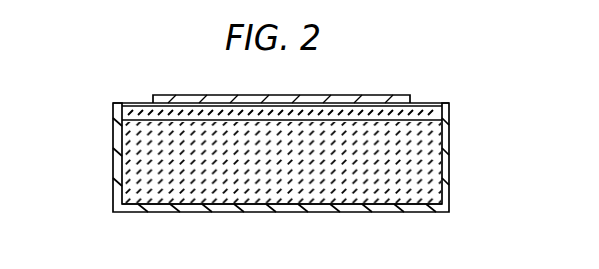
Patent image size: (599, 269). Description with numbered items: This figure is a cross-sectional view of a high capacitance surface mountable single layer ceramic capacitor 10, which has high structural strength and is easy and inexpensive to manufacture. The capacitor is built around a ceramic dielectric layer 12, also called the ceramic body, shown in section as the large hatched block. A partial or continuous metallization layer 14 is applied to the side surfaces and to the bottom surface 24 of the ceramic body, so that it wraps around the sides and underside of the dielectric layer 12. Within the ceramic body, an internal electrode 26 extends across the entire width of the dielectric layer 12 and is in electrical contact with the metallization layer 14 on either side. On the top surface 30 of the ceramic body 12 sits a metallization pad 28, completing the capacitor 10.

The single layer ceramic capacitor 10 is at (122, 72).
The ceramic dielectric layer 12 is at (150, 163).
The metallization layer 14 is at (449, 157).
The bottom surface 24 is at (418, 212).
The internal electrode 26 is at (420, 115).
The metallization pad 28 is at (370, 95).
The top surface 30 is at (141, 103).